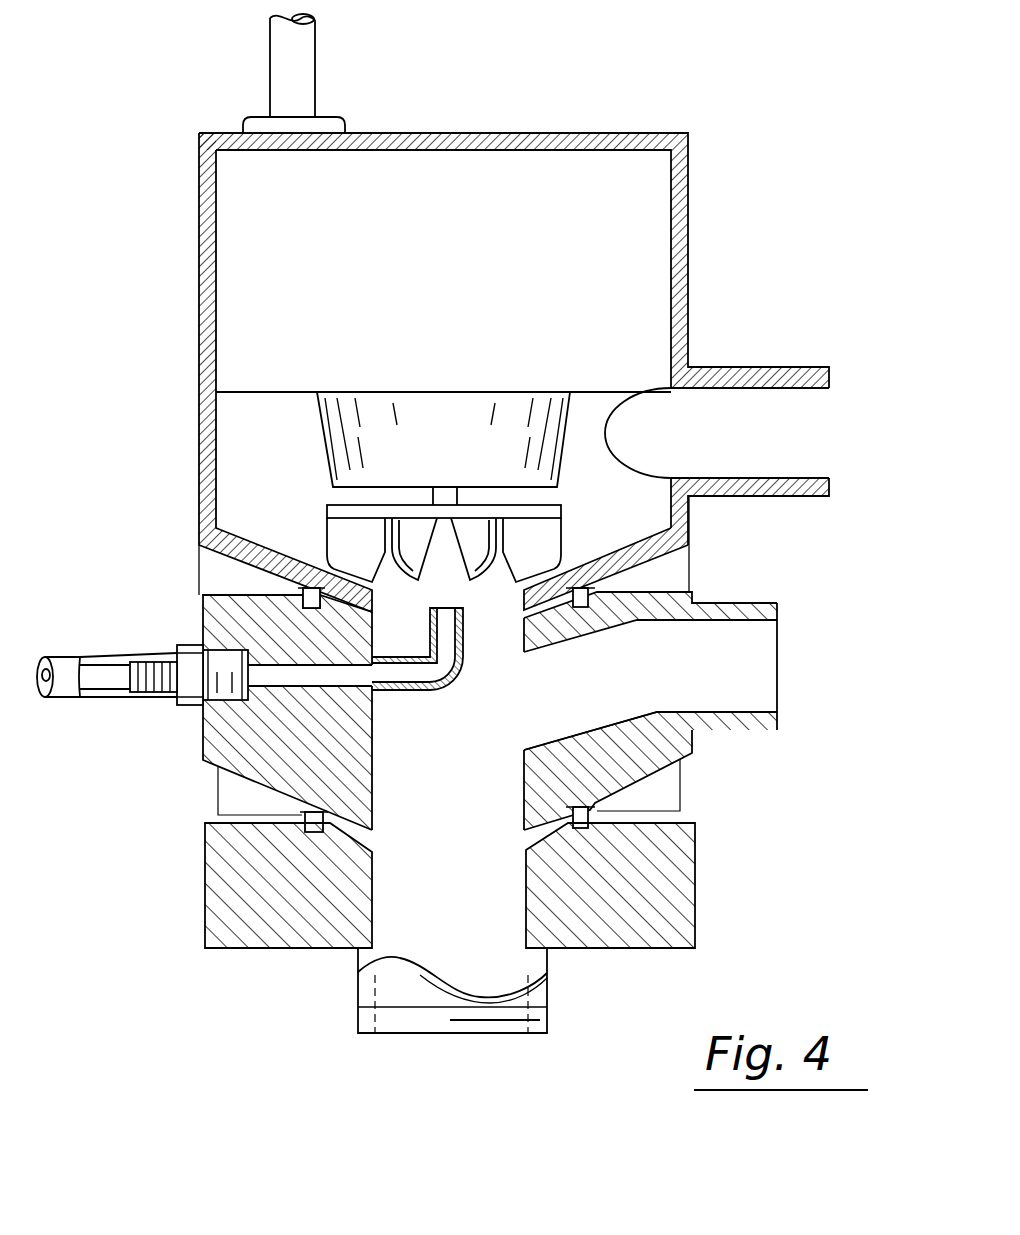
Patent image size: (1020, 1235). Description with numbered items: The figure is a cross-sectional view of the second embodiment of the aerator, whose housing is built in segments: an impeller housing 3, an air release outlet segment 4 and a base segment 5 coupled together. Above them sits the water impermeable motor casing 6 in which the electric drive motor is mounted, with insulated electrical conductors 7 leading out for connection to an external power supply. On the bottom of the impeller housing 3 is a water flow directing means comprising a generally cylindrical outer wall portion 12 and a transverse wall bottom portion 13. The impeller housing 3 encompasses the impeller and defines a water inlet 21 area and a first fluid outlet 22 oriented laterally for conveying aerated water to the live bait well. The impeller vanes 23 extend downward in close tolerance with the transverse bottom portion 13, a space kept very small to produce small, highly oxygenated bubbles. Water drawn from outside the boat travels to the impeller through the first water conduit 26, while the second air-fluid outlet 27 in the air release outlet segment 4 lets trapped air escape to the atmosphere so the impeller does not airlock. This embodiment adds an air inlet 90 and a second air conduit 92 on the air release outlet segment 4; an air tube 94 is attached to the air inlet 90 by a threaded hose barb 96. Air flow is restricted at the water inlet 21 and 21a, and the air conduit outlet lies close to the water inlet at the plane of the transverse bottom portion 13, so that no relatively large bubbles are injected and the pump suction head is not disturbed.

The impeller housing 3 is at (694, 275).
The air release outlet segment 4 is at (691, 762).
The base segment 5 is at (699, 888).
The motor casing 6 is at (617, 222).
The electrical conductors 7 is at (307, 60).
The outer wall portion 12 is at (199, 451).
The transverse wall bottom portion 13 is at (650, 528).
The water inlet 21 is at (416, 633).
The water inlet 21a is at (478, 603).
The first fluid outlet 22 is at (805, 431).
The impeller vanes 23 is at (553, 543).
The first water conduit 26 is at (456, 928).
The second air-fluid outlet 27 is at (765, 680).
The air inlet 90 is at (223, 698).
The second air conduit 92 is at (395, 683).
The air tube 94 is at (55, 697).
The threaded hose barb 96 is at (150, 661).